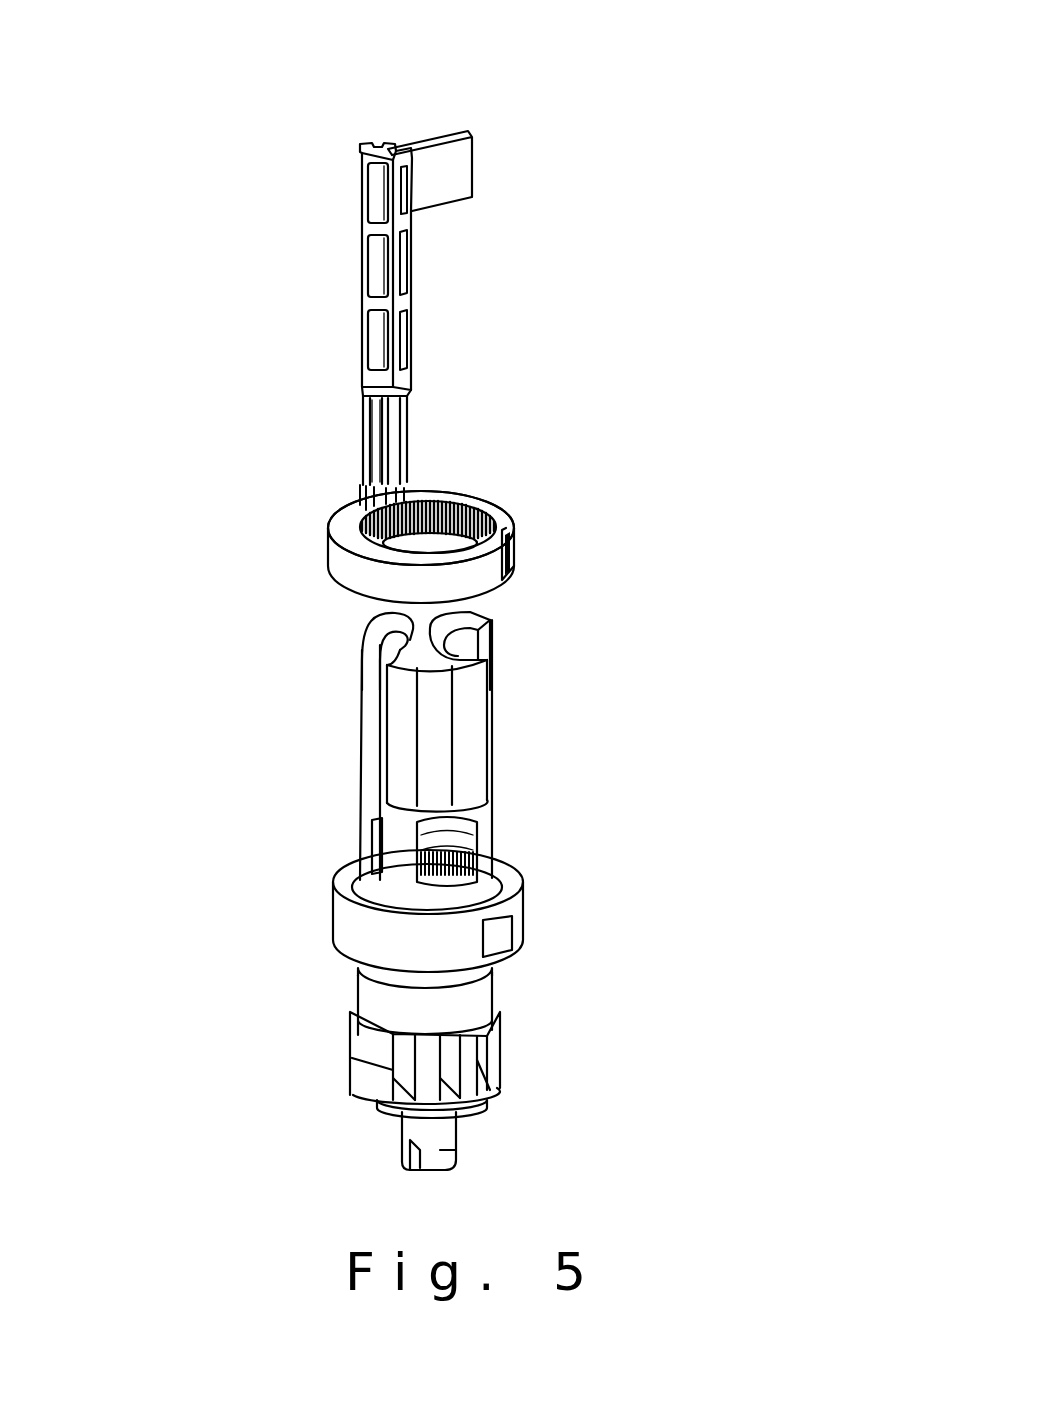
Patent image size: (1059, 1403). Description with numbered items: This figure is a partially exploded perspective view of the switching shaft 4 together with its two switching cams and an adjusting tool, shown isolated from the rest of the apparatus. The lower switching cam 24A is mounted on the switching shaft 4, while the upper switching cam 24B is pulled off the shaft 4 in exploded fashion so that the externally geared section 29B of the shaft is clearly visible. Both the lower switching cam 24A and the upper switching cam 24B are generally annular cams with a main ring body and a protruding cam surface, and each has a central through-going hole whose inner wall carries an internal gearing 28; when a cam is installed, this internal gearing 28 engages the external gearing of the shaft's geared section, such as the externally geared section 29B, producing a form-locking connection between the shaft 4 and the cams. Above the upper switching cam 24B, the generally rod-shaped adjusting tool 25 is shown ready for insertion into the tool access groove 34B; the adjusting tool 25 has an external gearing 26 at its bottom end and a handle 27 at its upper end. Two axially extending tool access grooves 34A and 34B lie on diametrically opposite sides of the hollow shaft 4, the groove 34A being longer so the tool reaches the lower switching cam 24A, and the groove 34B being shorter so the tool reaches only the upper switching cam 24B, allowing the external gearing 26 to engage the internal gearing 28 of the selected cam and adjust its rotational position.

The switching shaft 4 is at (492, 725).
The lower switching cam 24A is at (526, 903).
The upper switching cam 24B is at (515, 520).
The adjusting tool 25 is at (413, 345).
The external gearing 26 is at (410, 477).
The handle 27 is at (475, 170).
The internal gearing 28 is at (483, 488).
The externally geared section 29B is at (420, 860).
The tool access groove 34A is at (473, 630).
The tool access groove 34B is at (385, 650).